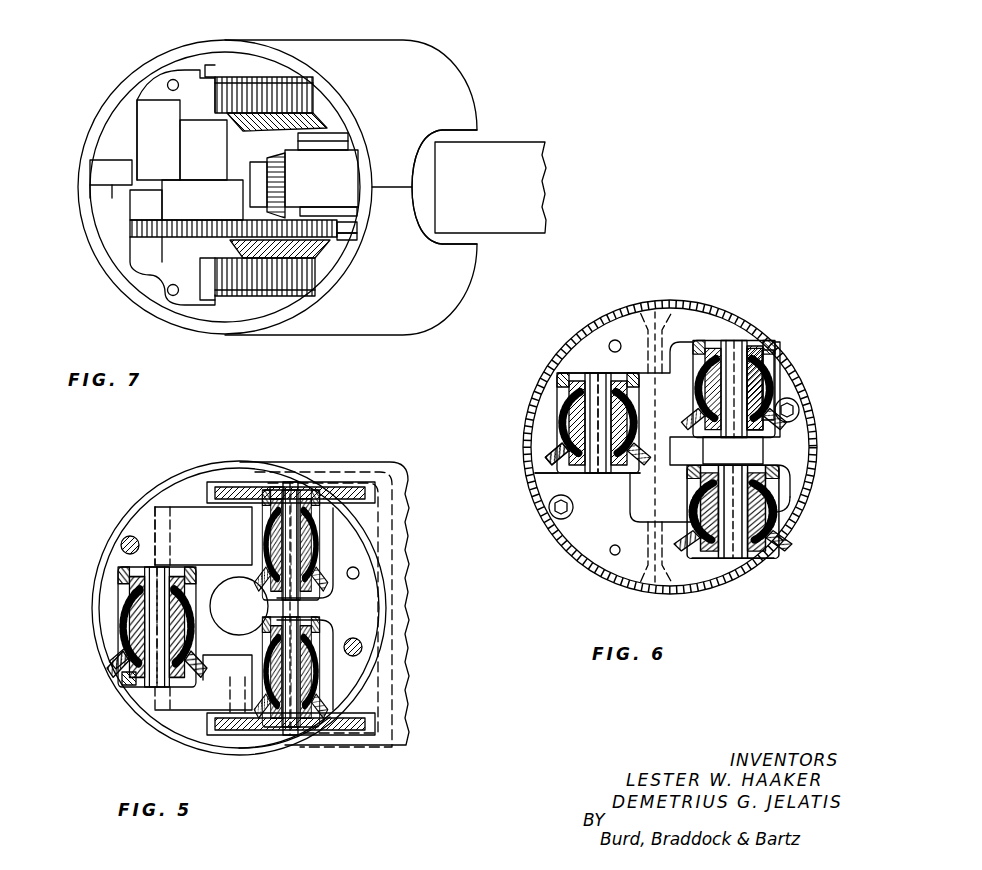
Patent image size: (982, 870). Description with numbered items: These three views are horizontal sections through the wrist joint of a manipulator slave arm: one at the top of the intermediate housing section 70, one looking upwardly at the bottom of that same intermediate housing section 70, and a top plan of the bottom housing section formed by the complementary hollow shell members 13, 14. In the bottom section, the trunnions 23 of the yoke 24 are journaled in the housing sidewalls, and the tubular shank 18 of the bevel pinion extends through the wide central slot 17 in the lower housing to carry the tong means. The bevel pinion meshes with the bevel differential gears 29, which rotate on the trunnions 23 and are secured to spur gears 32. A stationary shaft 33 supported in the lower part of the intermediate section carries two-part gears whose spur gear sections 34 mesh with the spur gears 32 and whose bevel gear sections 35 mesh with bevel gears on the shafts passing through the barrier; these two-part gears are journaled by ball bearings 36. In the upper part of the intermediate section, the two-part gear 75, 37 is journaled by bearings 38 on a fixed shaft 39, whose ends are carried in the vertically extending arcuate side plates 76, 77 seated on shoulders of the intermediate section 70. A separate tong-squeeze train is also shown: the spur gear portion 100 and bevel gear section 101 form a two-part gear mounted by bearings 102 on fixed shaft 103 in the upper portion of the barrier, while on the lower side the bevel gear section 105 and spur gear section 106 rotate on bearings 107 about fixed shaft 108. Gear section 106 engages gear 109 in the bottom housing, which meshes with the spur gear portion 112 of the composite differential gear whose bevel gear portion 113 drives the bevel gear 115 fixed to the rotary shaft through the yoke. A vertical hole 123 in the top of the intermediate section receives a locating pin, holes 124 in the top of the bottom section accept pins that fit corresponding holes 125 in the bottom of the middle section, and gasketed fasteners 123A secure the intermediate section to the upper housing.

In FIG. 7, the hollow shell member 13 is at (287, 322).
In FIG. 7, the hollow shell member 14 is at (264, 52).
In FIG. 7, the central slot 17 is at (468, 138).
In FIG. 7, the tubular shank 18 is at (532, 193).
In FIG. 7, the trunnions 23 is at (333, 138).
In FIG. 7, the yoke 24 is at (330, 178).
In FIG. 7, the bevel differential gears 29 is at (212, 138).
In FIG. 7, the spur gears 32 is at (262, 92).
In FIG. 6, the stationary shaft 33 is at (732, 350).
In FIG. 6, the spur gear section 34 is at (770, 362).
In FIG. 6, the bevel gear section 35 is at (812, 424).
In FIG. 6, the ball bearings 36 is at (760, 346).
In FIG. 5, the two-part gear 37 is at (347, 490).
In FIG. 5, the bearings 38 is at (270, 490).
In FIG. 5, the fixed shaft 39 is at (290, 492).
In FIG. 6, the intermediate housing section 70 is at (796, 522).
In FIG. 5, the intermediate housing section 70 is at (360, 605).
In FIG. 5, the bevel gear section 75 is at (340, 566).
In FIG. 5, the arcuate side plate 76 is at (196, 722).
In FIG. 5, the arcuate side plate 77 is at (196, 494).
In FIG. 5, the spur gear portion 100 is at (122, 574).
In FIG. 5, the bevel gear section 101 is at (135, 665).
In FIG. 5, the bearings 102 is at (140, 673).
In FIG. 5, the fixed shaft 103 is at (160, 603).
In FIG. 6, the bevel gear section 105 is at (550, 452).
In FIG. 6, the spur gear section 106 is at (564, 381).
In FIG. 6, the bearings 107 is at (554, 477).
In FIG. 6, the fixed shaft 108 is at (592, 428).
In FIG. 7, the gear 109 is at (148, 233).
In FIG. 7, the spur gear portion 112 is at (345, 238).
In FIG. 7, the bevel gear portion 113 is at (342, 227).
In FIG. 7, the bevel gear 115 is at (278, 158).
In FIG. 5, the vertical hole 123 is at (362, 574).
In FIG. 6, the fasteners 123A is at (797, 400).
In FIG. 5, the fasteners 123A is at (125, 538).
In FIG. 7, the holes 124 is at (169, 80).
In FIG. 6, the holes 125 is at (617, 339).